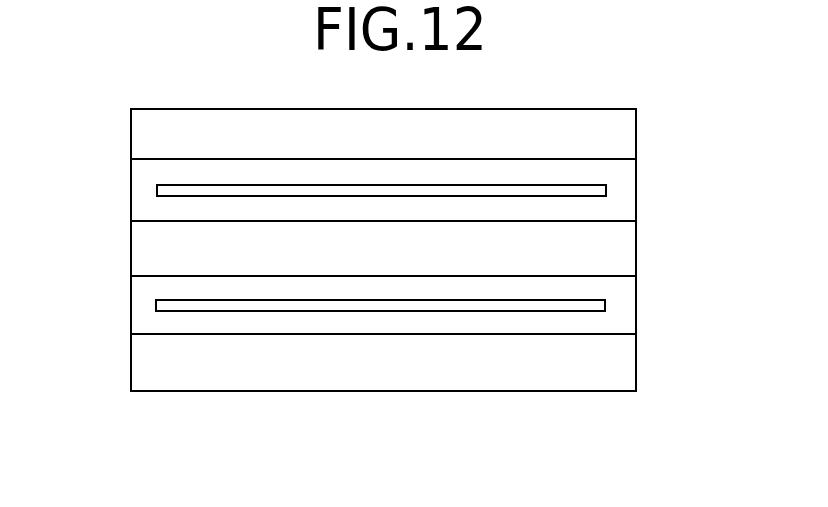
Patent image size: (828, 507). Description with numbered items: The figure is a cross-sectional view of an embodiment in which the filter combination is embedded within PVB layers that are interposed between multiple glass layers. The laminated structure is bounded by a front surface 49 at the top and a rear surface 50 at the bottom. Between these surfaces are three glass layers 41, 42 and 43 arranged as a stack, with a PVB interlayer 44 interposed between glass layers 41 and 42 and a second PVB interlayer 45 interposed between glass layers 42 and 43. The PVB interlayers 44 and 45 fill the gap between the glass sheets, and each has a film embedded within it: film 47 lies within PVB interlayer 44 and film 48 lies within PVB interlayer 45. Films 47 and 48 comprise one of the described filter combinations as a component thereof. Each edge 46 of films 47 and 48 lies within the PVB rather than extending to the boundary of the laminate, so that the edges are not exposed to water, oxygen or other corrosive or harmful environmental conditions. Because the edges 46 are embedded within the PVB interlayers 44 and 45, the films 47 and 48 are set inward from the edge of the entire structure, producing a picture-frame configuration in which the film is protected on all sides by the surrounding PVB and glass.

The glass layer 41 is at (623, 143).
The glass layer 42 is at (622, 258).
The glass layer 43 is at (622, 373).
The PVB interlayer 44 is at (623, 186).
The PVB interlayer 45 is at (622, 292).
The edge 46 is at (606, 191).
The film 47 is at (173, 188).
The film 48 is at (177, 305).
The front surface 49 is at (596, 110).
The rear surface 50 is at (507, 391).